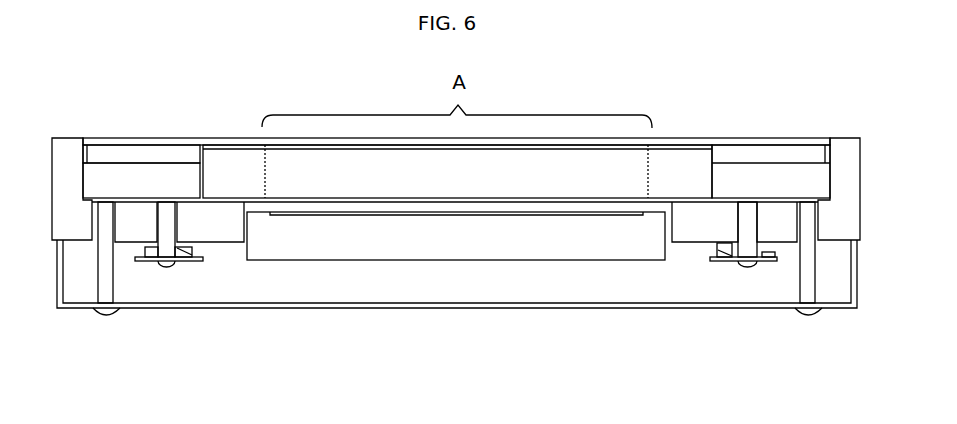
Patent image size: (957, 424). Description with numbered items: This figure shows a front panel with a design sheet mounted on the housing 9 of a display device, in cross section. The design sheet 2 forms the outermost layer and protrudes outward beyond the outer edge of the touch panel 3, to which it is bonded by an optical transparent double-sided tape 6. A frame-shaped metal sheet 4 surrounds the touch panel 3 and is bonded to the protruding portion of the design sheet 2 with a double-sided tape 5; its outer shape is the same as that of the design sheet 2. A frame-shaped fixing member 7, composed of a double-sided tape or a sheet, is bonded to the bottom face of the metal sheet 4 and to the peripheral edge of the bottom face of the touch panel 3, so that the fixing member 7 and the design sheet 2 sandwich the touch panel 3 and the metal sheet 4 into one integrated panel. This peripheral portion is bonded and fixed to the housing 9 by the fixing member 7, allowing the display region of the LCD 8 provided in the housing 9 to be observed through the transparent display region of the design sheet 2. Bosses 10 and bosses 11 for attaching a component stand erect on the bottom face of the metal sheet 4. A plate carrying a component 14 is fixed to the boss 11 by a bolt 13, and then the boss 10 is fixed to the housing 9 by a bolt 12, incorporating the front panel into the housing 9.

The design sheet 2 is at (218, 138).
The touch panel 3 is at (512, 166).
The metal sheet 4 is at (105, 157).
The double-sided tape 5 is at (155, 160).
The optical transparent double-sided tape 6 is at (693, 138).
The fixing member 7 is at (693, 203).
The LCD 8 is at (473, 242).
The housing 9 is at (845, 142).
The boss 10 is at (115, 288).
The boss for attaching a component 11 is at (200, 260).
The bolt 12 is at (95, 314).
The bolt 13 is at (165, 263).
The component 14 is at (145, 260).